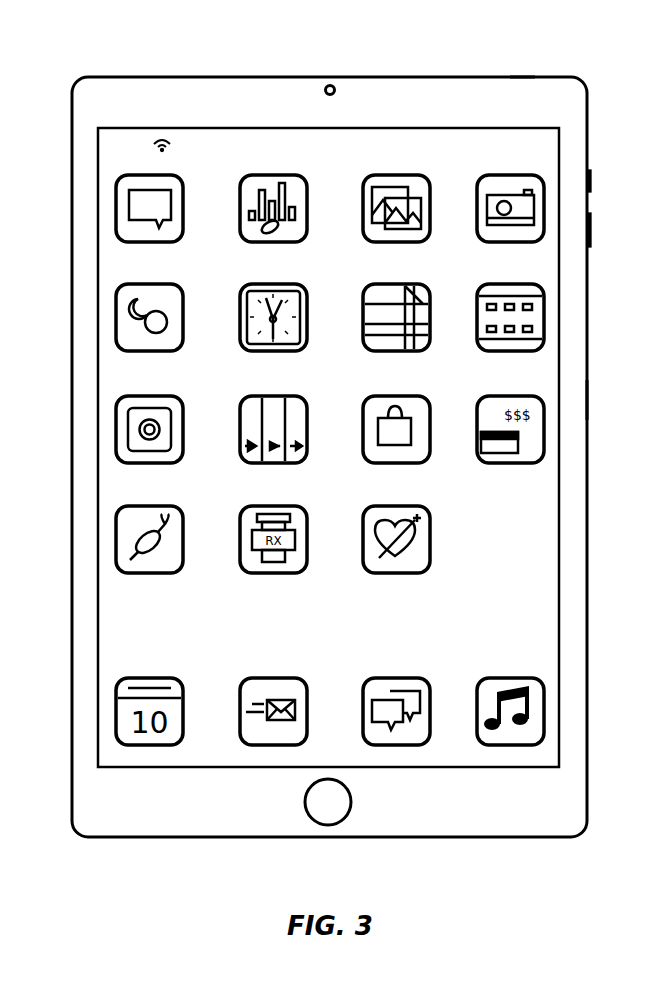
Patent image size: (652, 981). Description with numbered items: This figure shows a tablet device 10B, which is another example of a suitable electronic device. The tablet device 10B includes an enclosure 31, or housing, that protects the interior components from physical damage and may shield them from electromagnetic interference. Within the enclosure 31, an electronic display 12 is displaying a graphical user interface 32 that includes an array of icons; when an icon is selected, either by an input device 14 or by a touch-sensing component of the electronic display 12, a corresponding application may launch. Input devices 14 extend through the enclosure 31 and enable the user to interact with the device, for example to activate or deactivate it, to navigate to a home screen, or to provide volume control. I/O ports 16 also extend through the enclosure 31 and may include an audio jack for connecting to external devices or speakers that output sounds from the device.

The tablet device 10B is at (57, 65).
The electronic display 12 is at (559, 512).
The input devices 14 is at (524, 77).
The I/O ports 16 is at (150, 77).
The enclosure 31 is at (590, 400).
The graphical user interface 32 is at (535, 483).